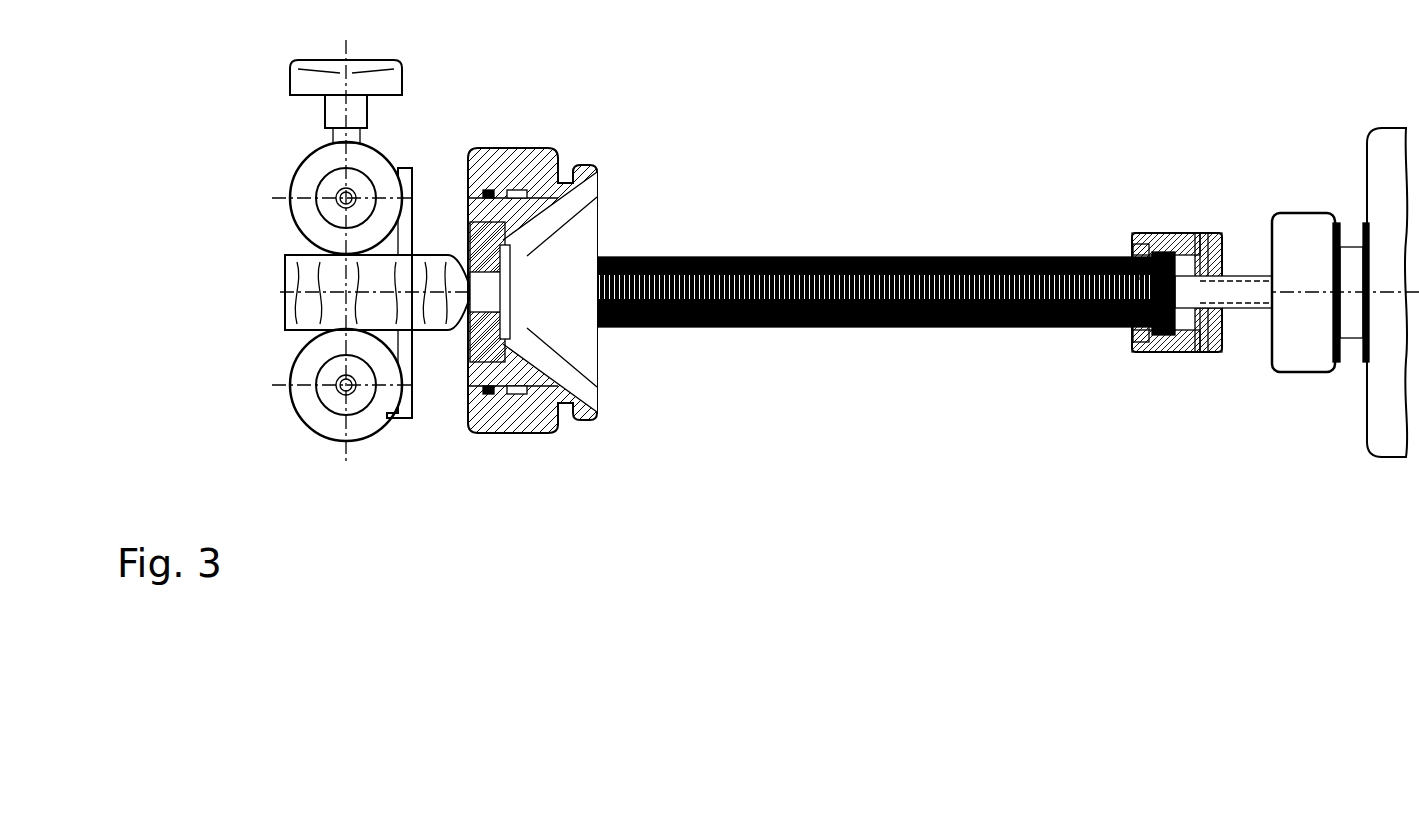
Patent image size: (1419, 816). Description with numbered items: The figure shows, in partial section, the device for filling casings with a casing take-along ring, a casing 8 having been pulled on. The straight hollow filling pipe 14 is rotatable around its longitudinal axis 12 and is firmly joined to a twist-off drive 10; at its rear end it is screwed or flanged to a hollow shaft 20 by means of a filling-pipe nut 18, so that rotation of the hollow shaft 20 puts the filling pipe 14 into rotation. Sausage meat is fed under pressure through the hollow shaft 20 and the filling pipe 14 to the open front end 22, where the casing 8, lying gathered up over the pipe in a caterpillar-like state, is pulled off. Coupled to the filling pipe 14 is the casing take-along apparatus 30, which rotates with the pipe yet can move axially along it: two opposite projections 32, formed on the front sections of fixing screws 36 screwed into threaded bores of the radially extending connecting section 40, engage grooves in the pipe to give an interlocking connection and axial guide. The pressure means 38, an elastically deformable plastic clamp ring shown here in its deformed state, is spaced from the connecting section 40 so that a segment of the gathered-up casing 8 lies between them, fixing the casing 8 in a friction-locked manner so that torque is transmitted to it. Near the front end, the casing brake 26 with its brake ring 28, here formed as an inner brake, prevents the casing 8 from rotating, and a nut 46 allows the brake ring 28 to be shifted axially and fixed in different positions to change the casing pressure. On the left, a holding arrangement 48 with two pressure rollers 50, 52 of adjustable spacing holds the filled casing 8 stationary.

The casing 8 is at (300, 290).
The twist-off drive 10 is at (1382, 152).
The longitudinal axis 12 is at (1240, 310).
The filling pipe 14 is at (1252, 307).
The filling-pipe nut 18 is at (1292, 350).
The hollow shaft 20 is at (1362, 345).
The open front end 22 is at (532, 247).
The casing brake 26 is at (570, 238).
The brake ring 28 is at (468, 236).
The casing take-along apparatus 30 is at (1156, 305).
The projections 32 is at (1222, 345).
The fixing screws 36 is at (1224, 262).
The pressure means 38 is at (1143, 248).
The connecting section 40 is at (1216, 352).
The nut 46 is at (552, 152).
The holding arrangement 48 is at (249, 250).
The pressure roller 50 is at (300, 187).
The pressure roller 52 is at (300, 382).